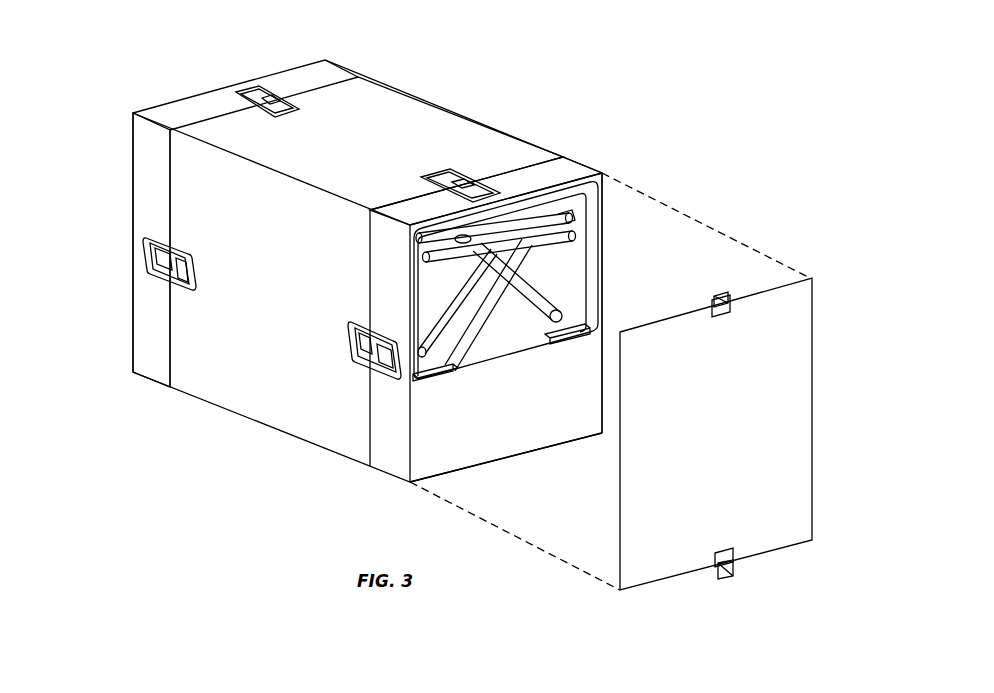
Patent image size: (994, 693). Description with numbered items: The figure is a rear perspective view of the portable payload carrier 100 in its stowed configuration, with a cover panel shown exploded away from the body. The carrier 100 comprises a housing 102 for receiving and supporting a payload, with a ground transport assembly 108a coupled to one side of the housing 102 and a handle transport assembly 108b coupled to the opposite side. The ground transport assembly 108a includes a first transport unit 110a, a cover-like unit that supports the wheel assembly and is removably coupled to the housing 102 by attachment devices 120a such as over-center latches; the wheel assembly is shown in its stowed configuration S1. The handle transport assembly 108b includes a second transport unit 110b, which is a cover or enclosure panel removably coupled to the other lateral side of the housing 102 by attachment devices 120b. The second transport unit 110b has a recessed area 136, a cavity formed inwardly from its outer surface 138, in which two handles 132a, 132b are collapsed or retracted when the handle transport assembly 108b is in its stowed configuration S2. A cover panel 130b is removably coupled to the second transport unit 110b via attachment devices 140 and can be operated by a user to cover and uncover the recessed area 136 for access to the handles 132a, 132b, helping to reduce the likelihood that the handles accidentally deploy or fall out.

The portable payload carrier 100 is at (170, 63).
The housing 102 is at (410, 101).
The ground transport assembly 108a is at (118, 125).
The handle transport assembly 108b is at (625, 165).
The first transport unit 110a is at (142, 187).
The second transport unit 110b is at (604, 334).
The attachment devices 120a is at (302, 107).
The attachment devices 120b is at (452, 172).
The cover panel 130b is at (790, 423).
The handle 132a is at (455, 328).
The handle 132b is at (528, 303).
The recessed area 136 is at (425, 298).
The outer surface 138 is at (483, 461).
The attachment devices 140 is at (716, 290).
The stowed configuration S1 is at (346, 48).
The stowed configuration S2 is at (636, 128).